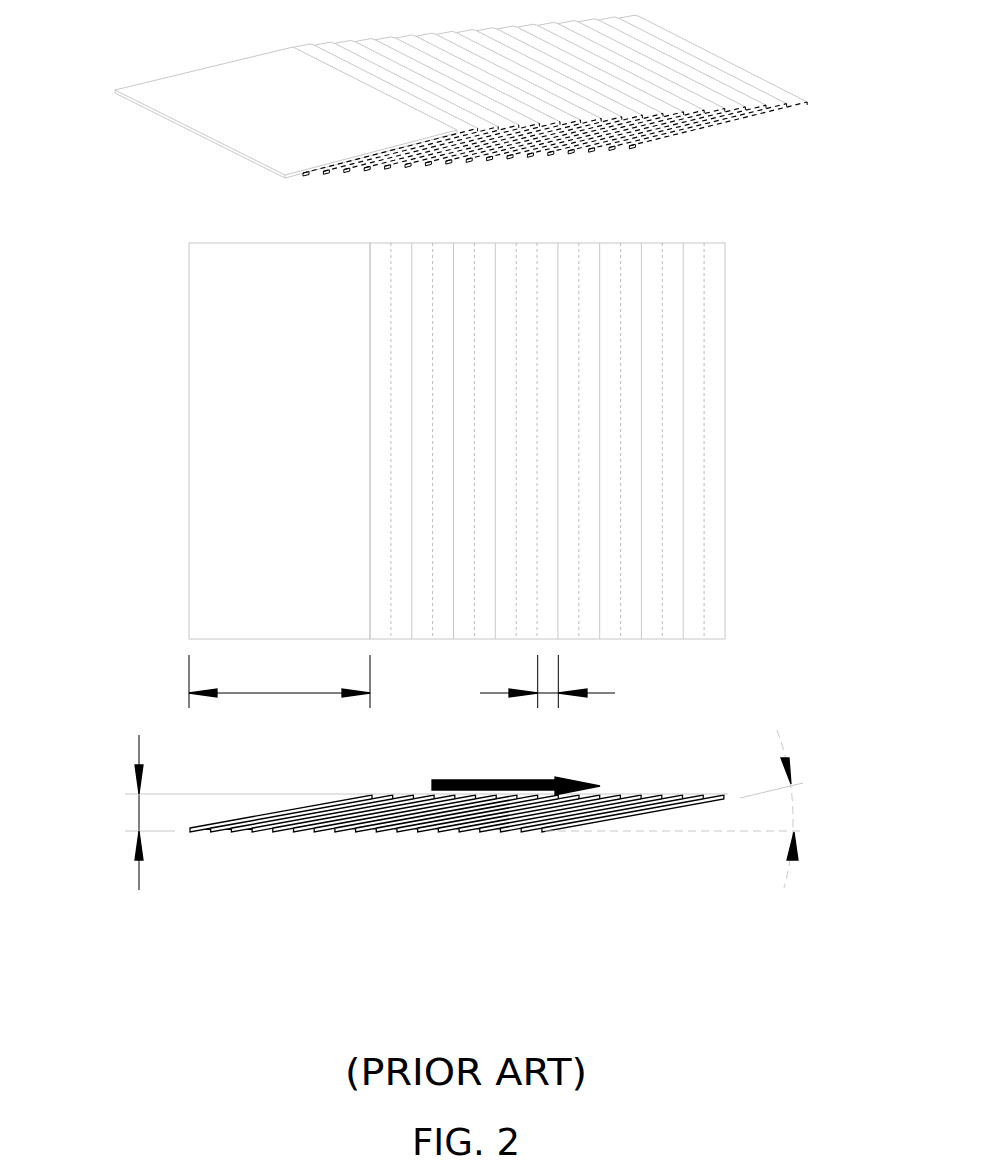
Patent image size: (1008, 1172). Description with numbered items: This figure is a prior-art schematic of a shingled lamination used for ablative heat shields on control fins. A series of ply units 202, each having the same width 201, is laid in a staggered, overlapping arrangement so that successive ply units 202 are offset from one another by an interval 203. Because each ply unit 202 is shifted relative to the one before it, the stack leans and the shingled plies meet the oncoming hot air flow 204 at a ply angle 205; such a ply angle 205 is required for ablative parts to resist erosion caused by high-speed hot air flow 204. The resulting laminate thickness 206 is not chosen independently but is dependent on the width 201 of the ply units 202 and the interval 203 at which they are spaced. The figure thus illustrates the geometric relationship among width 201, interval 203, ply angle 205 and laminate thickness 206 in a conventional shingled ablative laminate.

The width 201 is at (267, 687).
The ply unit 202 is at (245, 543).
The interval 203 is at (547, 707).
The hot air flow 204 is at (497, 782).
The ply angle 205 is at (798, 808).
The laminate thickness 206 is at (128, 821).